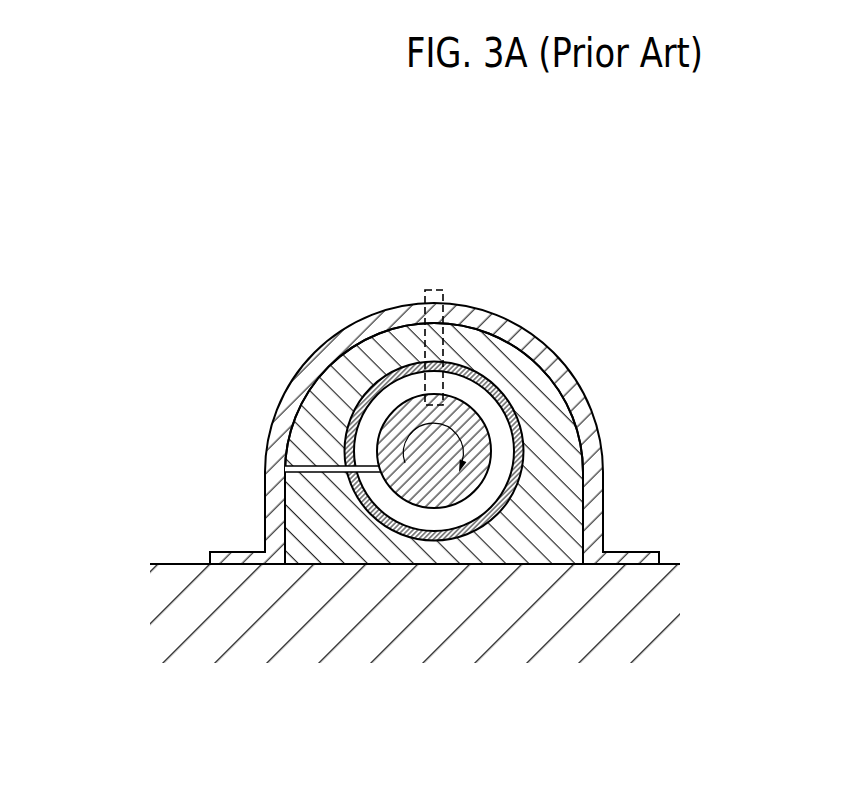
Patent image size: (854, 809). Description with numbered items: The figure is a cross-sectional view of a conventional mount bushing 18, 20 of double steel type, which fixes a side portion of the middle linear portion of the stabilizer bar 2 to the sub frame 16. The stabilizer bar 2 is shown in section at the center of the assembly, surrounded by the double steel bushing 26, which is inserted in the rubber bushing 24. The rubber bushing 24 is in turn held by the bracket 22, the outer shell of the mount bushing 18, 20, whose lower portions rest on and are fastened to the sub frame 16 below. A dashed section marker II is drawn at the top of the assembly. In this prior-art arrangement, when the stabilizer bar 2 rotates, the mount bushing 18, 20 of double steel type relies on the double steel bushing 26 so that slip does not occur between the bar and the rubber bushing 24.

The stabilizer bar 2 is at (407, 437).
The sub frame 16 is at (450, 739).
The mount bushing 18 is at (441, 401).
The mount bushing 20 is at (441, 433).
The bracket 22 is at (578, 395).
The rubber bushing 24 is at (537, 470).
The double steel bushing 26 is at (500, 387).
The section line II is at (442, 285).